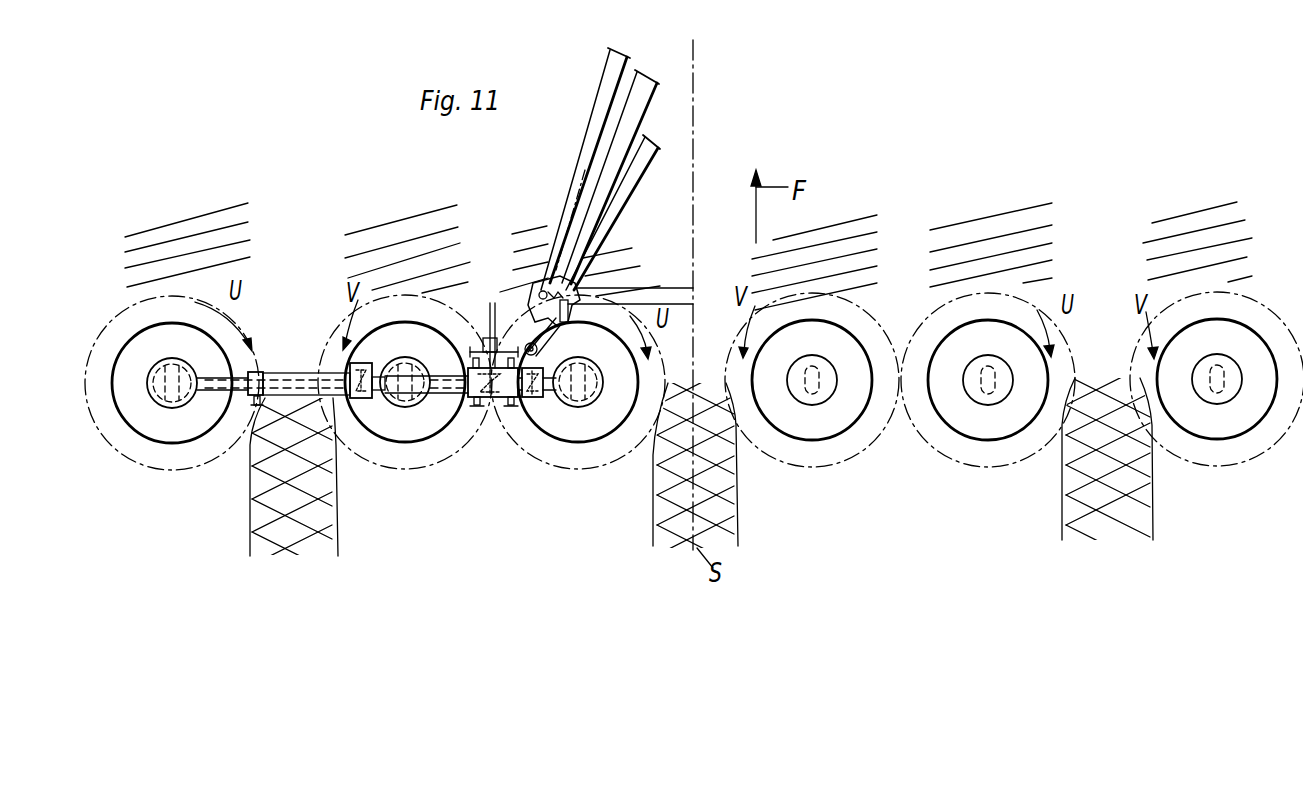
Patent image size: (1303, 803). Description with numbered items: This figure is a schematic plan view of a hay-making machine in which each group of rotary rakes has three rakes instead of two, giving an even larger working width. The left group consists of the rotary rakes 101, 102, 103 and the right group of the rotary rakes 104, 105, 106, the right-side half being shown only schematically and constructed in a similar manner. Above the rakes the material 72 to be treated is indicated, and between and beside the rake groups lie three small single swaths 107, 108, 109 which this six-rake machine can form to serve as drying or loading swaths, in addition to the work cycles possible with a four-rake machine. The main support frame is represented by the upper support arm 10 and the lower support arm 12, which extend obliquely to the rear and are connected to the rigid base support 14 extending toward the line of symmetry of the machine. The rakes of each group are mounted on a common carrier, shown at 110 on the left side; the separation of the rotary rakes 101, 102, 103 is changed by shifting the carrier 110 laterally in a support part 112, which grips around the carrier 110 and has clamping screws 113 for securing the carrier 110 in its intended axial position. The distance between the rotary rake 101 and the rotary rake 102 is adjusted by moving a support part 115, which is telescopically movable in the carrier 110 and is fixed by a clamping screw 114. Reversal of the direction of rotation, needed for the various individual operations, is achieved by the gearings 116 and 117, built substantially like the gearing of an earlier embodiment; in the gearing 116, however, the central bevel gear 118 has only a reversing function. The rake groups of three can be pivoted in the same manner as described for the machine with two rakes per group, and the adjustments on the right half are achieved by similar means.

The upper support arm 10 is at (635, 110).
The lower support arm 12 is at (610, 90).
The rigid base support 14 is at (658, 290).
The material to be treated 72 is at (367, 230).
The rotary rake 101 is at (179, 462).
The rotary rake 102 is at (435, 450).
The rotary rake 103 is at (596, 450).
The rotary rake 104 is at (832, 452).
The rotary rake 105 is at (997, 452).
The rotary rake 106 is at (1225, 452).
The small single swath 107 is at (305, 538).
The small single swath 108 is at (668, 535).
The small single swath 109 is at (1105, 528).
The common carrier 110 is at (330, 398).
The support part 112 is at (486, 338).
The clamping screws 113 is at (512, 405).
The clamping screw 114 is at (257, 408).
The support part 115 is at (250, 372).
The gearing 116 is at (380, 402).
The gearing 117 is at (537, 400).
The central bevel gear 118 is at (373, 368).